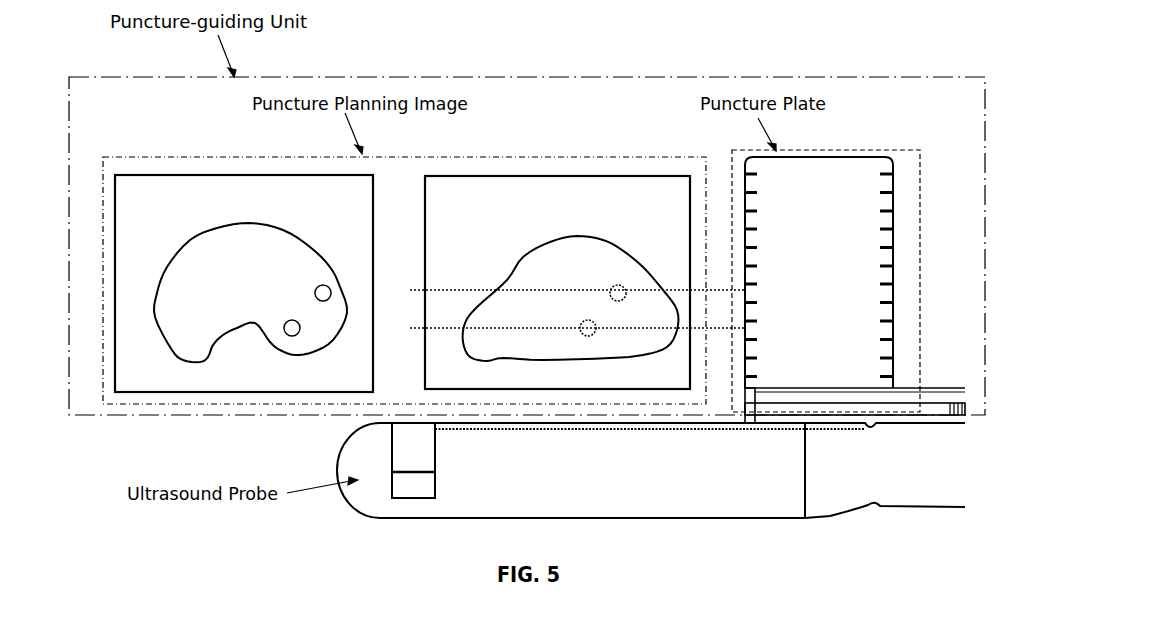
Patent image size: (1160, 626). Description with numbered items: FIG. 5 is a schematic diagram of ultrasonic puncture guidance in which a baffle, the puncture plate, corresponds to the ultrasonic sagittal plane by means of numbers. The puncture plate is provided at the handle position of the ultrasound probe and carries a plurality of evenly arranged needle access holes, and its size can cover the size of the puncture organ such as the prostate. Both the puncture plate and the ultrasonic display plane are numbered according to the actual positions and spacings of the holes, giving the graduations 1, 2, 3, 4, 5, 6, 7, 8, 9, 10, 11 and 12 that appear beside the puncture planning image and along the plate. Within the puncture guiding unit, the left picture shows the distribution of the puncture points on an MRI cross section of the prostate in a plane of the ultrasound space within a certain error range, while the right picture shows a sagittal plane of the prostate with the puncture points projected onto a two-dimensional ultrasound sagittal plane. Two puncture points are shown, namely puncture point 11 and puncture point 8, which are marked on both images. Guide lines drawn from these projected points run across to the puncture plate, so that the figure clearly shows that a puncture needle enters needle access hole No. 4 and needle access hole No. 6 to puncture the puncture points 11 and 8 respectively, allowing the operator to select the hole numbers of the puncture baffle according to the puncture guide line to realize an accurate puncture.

The needle access hole number 1 is at (643, 381).
The needle access hole number 2 is at (643, 362).
The needle access hole number 3 is at (643, 343).
The needle access hole No. 4 is at (643, 324).
The needle access hole number 5 is at (643, 305).
The needle access hole No. 6 is at (643, 286).
The needle access hole number 7 is at (643, 267).
The puncture point 8 is at (595, 269).
The needle access hole number 9 is at (643, 229).
The needle access hole number 10 is at (640, 210).
The puncture point 11 is at (577, 258).
The needle access hole number 12 is at (640, 172).